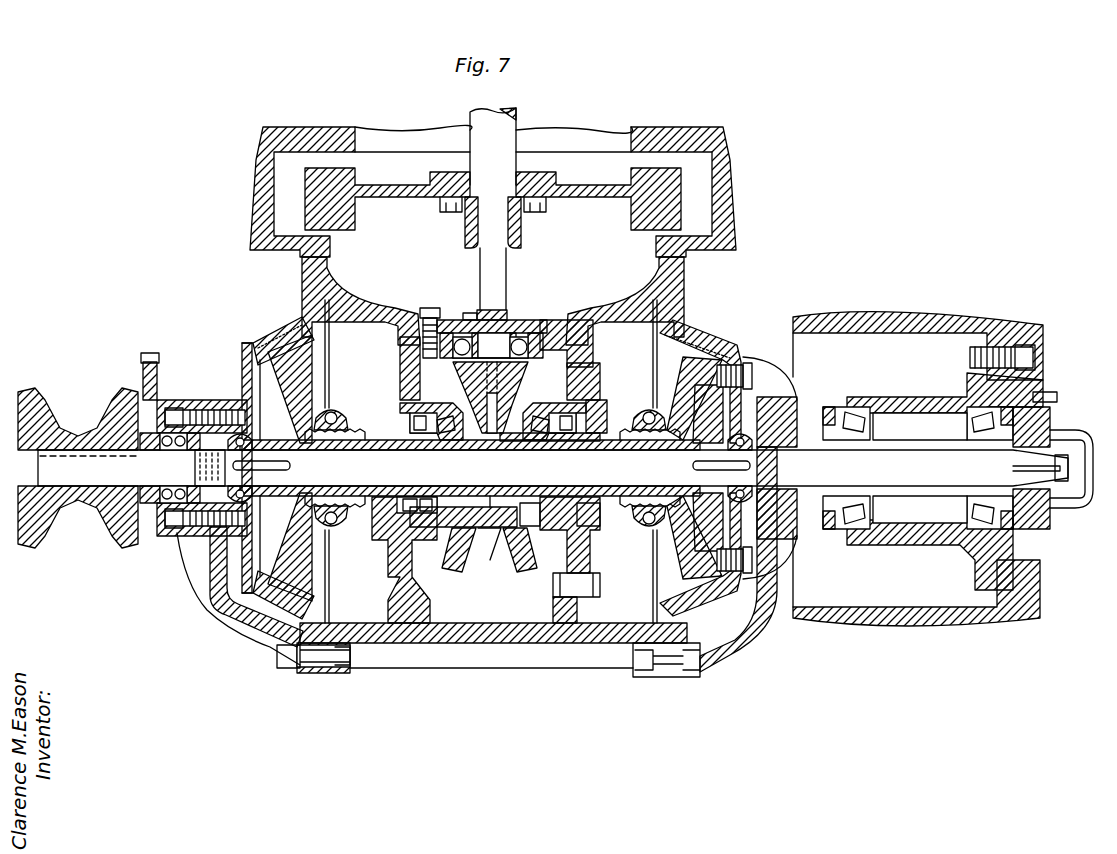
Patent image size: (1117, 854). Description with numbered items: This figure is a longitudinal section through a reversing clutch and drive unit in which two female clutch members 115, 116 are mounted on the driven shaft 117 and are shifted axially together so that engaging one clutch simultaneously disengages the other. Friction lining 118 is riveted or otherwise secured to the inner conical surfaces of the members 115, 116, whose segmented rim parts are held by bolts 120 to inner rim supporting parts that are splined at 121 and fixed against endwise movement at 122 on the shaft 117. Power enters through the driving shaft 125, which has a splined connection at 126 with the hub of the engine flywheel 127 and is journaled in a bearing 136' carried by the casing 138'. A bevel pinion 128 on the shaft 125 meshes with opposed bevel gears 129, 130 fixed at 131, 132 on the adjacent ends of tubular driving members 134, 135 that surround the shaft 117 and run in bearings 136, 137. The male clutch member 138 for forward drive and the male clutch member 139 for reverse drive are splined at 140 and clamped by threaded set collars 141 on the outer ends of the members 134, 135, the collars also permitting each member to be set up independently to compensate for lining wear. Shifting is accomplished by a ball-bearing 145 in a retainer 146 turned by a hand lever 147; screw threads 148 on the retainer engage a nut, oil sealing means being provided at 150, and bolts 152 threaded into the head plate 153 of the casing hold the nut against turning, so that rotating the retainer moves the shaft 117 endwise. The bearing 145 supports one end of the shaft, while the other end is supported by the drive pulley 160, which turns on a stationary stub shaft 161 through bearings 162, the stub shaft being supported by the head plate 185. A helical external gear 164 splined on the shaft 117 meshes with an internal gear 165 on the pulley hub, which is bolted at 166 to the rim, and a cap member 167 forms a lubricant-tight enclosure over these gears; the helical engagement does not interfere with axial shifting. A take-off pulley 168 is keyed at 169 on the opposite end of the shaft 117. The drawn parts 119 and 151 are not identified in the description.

The female clutch member 115 is at (248, 343).
The female clutch member 116 is at (722, 345).
The driven shaft 117 is at (490, 522).
The friction lining 118 is at (330, 327).
The left clutch cone 119 is at (270, 420).
The bolts 120 is at (742, 360).
The splines 121 is at (283, 465).
The endwise fixing means 122 is at (243, 448).
The driving shaft 125 is at (503, 261).
The splined connection 126 is at (476, 245).
The engine flywheel 127 is at (607, 190).
The bevel pinion 128 is at (493, 362).
The bevel gear 129 is at (450, 360).
The bevel gear 130 is at (525, 385).
The fixing point 131 is at (473, 450).
The fixing point 132 is at (507, 447).
The tubular driving member 134 is at (412, 450).
The tubular driving member 135 is at (562, 450).
The bearing 136 is at (476, 480).
The bearing 136' is at (563, 329).
The bearing 137 is at (590, 427).
The male clutch member for forward drive 138 is at (525, 438).
The casing 138' is at (488, 663).
The male clutch member for reverse drive 139 is at (676, 352).
The splines 140 is at (325, 447).
The threaded set collar 141 is at (334, 406).
The ball-bearing 145 is at (166, 487).
The retainer 146 is at (177, 527).
The hand lever 147 is at (147, 364).
The screw threads 148 is at (218, 483).
The oil sealing means 150 is at (252, 484).
The adjusting screw 151 is at (205, 400).
The bolts 152 is at (232, 420).
The head plate 153 is at (233, 617).
The drive pulley 160 is at (923, 323).
The stationary stub shaft 161 is at (890, 448).
The bearings 162 is at (843, 417).
The helical external gear 164 is at (1047, 423).
The internal gear 165 is at (1025, 385).
The bolts 166 is at (1023, 358).
The cap member 167 is at (1075, 435).
The take-off pulley 168 is at (77, 410).
The key 169 is at (38, 452).
The head plate 185 is at (722, 640).